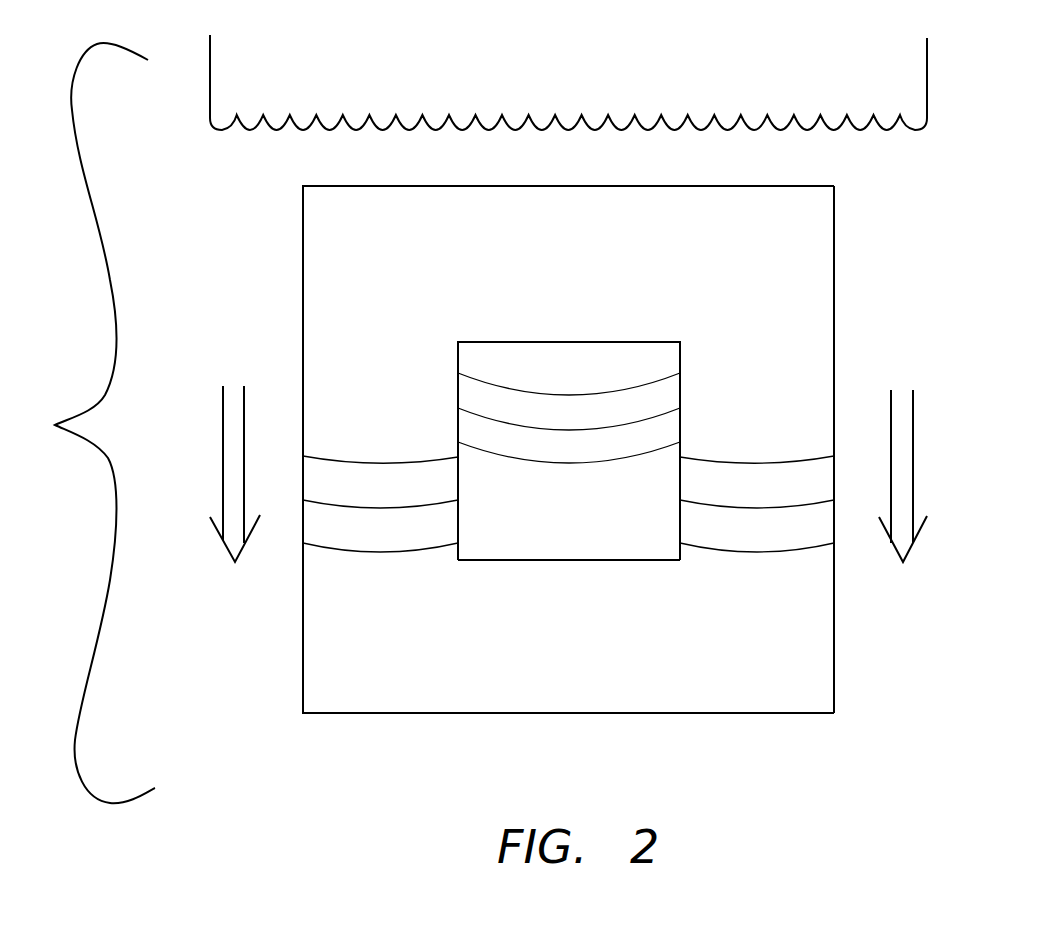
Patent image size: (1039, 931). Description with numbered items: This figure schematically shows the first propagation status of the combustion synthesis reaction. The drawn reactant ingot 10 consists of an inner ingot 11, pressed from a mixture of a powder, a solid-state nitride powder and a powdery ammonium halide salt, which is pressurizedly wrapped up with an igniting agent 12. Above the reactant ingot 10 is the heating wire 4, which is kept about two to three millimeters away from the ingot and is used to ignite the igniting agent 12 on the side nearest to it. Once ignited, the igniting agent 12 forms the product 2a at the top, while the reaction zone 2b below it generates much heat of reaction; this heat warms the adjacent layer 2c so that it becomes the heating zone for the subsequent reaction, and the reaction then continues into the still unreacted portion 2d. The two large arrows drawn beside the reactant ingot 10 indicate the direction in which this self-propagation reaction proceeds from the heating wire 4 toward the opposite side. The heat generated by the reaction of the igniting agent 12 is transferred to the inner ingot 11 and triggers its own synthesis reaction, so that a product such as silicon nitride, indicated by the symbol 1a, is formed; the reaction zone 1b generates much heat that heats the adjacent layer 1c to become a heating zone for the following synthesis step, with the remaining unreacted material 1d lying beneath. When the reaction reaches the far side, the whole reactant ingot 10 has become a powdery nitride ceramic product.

The heating wire 4 is at (668, 125).
The reactant ingot 10 is at (875, 677).
The ingot 11 is at (662, 363).
The igniting agent 12 is at (810, 270).
The product 1a is at (569, 380).
The reaction zone 1b is at (569, 415).
The adjacent layer 1c is at (569, 448).
The fourth layer of inner element 1d is at (569, 513).
The product 2a is at (568, 446).
The reaction zone 2b is at (568, 491).
The adjacent layer 2c is at (568, 535).
The fourth layer of outer body 2d is at (568, 628).